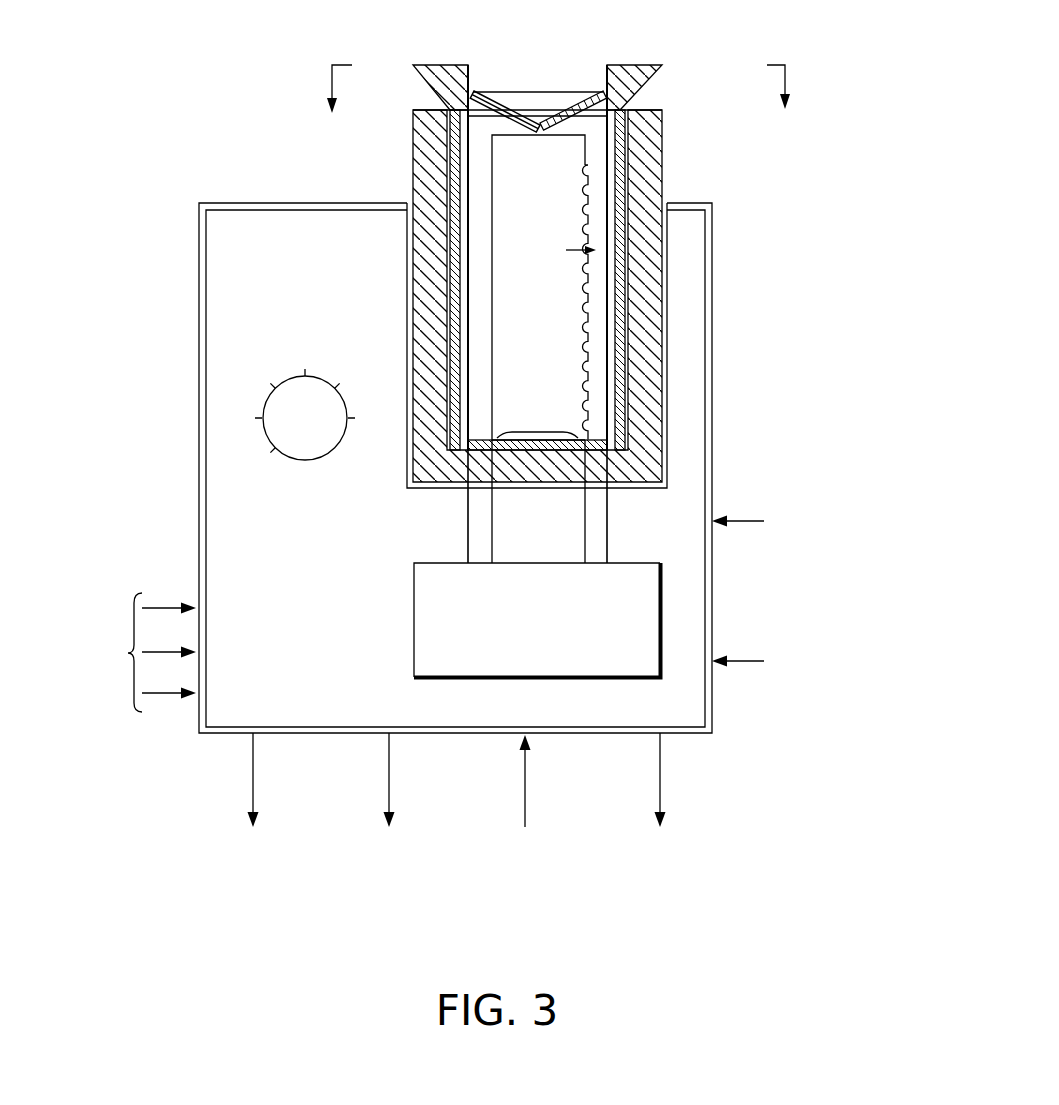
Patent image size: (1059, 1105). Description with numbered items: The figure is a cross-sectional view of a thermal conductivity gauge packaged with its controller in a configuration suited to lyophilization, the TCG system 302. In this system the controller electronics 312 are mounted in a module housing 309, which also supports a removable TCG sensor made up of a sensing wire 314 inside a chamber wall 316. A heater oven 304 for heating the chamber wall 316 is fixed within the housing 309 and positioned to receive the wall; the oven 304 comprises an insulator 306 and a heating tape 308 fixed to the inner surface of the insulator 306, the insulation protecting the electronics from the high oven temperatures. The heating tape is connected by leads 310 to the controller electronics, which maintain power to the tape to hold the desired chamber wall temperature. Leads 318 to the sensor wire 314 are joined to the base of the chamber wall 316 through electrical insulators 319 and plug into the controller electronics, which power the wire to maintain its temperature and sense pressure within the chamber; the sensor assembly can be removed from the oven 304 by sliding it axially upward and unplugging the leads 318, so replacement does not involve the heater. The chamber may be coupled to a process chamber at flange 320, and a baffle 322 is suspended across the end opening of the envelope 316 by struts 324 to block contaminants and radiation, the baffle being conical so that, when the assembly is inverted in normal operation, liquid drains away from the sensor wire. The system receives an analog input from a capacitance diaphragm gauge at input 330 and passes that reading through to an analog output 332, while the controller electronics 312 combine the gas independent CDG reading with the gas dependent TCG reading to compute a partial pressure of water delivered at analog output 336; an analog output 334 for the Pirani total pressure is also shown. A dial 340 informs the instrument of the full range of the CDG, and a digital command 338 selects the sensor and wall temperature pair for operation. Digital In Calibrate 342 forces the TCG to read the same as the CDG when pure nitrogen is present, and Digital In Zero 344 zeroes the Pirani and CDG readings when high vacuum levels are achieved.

The TCG system 302 is at (214, 86).
The heater oven 304 is at (683, 103).
The insulator 306 is at (662, 135).
The heating tape 308 is at (622, 163).
The module housing 309 is at (712, 292).
The leads 310 is at (467, 524).
The controller electronics 312 is at (513, 658).
The sensing wire 314 is at (584, 377).
The chamber wall 316 is at (470, 268).
The leads 318 is at (585, 545).
The electrical insulators 319 is at (536, 432).
The flange 320 is at (443, 66).
The baffle 322 is at (510, 92).
The struts 324 is at (476, 94).
The input 330 is at (526, 778).
The analog output 332 is at (390, 778).
The analog out Pirani total pressure 334 is at (254, 778).
The analog output 336 is at (661, 778).
The digital command 338 is at (154, 578).
The dial 340 is at (240, 397).
The Digital In Calibrate 342 is at (746, 660).
The Digital In Zero 344 is at (746, 520).